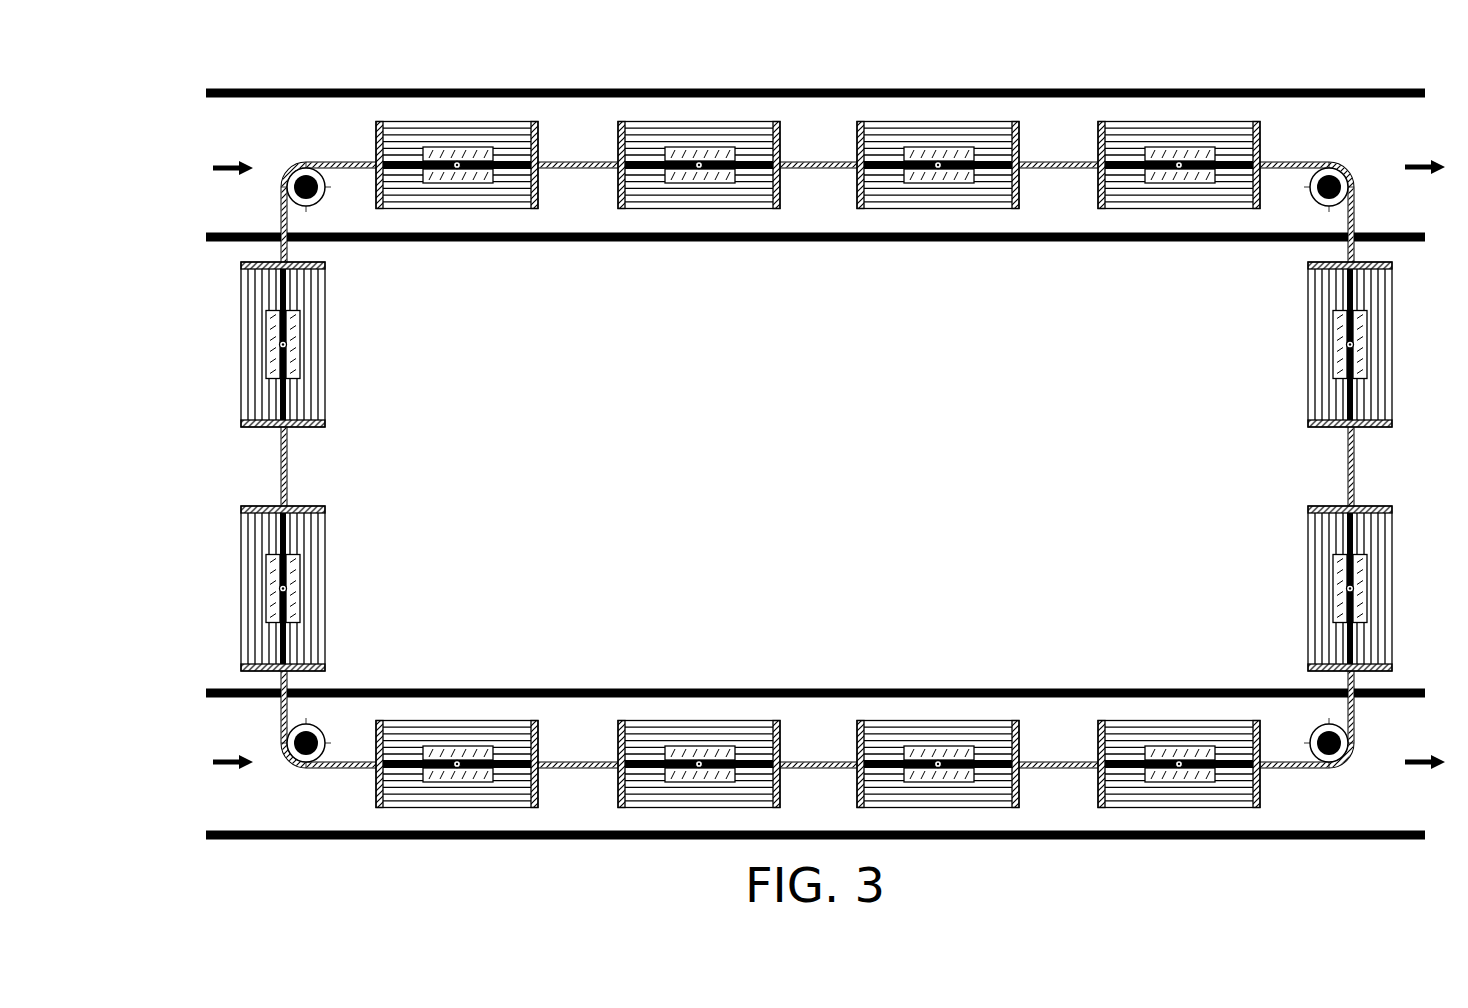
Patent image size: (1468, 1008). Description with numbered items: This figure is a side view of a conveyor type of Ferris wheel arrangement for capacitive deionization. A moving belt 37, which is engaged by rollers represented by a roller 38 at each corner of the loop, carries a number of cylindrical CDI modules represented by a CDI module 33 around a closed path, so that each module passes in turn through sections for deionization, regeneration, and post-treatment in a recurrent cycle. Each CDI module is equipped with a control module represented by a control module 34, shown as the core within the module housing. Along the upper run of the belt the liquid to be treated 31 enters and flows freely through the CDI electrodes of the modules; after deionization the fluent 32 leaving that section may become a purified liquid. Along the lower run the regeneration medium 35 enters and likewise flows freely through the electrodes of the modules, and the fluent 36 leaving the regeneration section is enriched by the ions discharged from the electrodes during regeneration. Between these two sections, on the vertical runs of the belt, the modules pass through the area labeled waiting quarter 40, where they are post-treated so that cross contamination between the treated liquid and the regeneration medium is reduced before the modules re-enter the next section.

The liquid to be treated 31 is at (216, 168).
The fluent 32 is at (1406, 168).
The CDI module 33 is at (288, 344).
The control module 34 is at (270, 367).
The regeneration medium 35 is at (215, 765).
The fluent 36 is at (1406, 765).
The moving belt 37 is at (1353, 463).
The roller 38 is at (323, 205).
The waiting quarter 40 is at (827, 460).